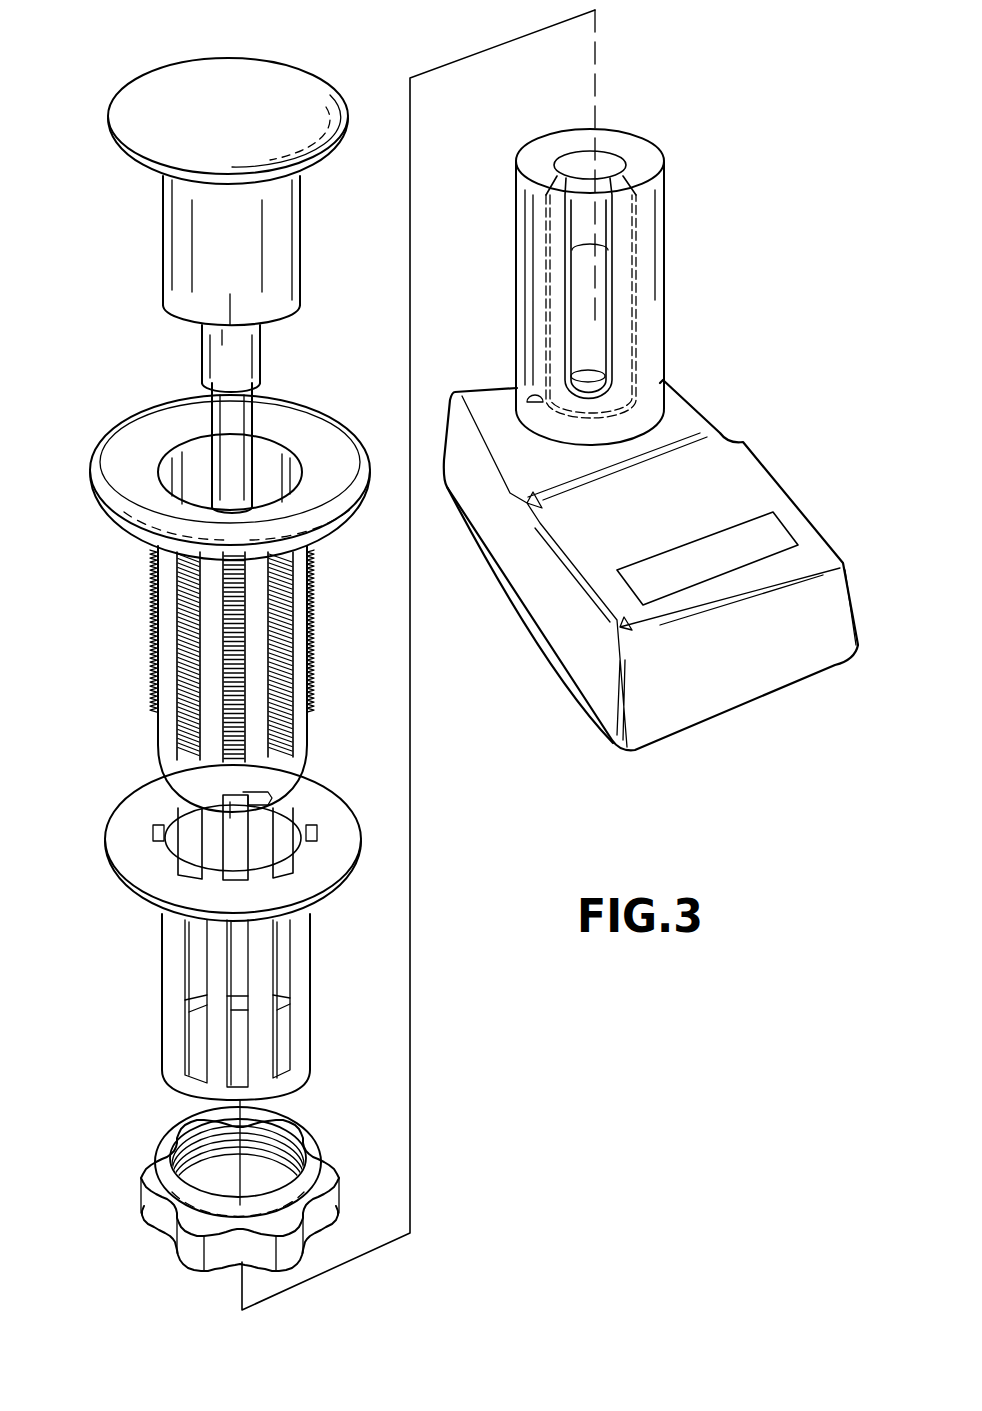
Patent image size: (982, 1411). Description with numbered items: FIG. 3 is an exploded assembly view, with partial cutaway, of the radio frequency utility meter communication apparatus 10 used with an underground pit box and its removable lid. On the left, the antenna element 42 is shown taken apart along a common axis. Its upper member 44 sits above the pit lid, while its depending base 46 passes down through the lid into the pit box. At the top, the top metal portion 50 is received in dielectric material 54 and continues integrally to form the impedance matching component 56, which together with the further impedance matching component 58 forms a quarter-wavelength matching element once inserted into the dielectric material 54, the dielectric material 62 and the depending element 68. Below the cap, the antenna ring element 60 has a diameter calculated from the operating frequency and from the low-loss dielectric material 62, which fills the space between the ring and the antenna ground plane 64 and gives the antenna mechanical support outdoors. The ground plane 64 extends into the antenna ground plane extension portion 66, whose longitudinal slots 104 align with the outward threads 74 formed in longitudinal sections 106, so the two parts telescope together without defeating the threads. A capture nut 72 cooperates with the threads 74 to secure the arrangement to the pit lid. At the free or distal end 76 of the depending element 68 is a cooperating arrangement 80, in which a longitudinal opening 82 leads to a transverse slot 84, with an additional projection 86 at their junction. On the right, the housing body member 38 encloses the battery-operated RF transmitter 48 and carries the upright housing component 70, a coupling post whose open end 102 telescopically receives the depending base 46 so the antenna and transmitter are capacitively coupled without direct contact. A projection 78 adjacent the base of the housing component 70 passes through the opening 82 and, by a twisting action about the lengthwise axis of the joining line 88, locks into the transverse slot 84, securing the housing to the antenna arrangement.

The radio frequency utility meter communication apparatus 10 is at (452, 978).
The housing body member 38 is at (651, 537).
The antenna element 42 is at (220, 269).
The upper member 44 is at (223, 104).
The depending base 46 is at (242, 679).
The RF transmitter 48 is at (527, 640).
The top metal portion 50 is at (300, 95).
The dielectric material 54 is at (190, 468).
The impedance matching component 56 is at (300, 259).
The impedance matching component 58 is at (262, 334).
The antenna ring element 60 is at (234, 468).
The dielectric material 62 is at (350, 500).
The antenna ground plane 64 is at (155, 880).
The antenna ground plane extension portion 66 is at (230, 1007).
The depending element 68 is at (158, 722).
The upright housing component 70 is at (636, 252).
The capture nut 72 is at (140, 1172).
The outward threads 74 is at (150, 582).
The free or distal end 76 is at (300, 805).
The projection 78 is at (527, 399).
The cooperating arrangement 80 is at (241, 826).
The longitudinal opening 82 is at (238, 842).
The transverse slot 84 is at (285, 780).
The additional projection 86 is at (203, 791).
The joining line 88 is at (597, 38).
The open end 102 is at (605, 158).
The longitudinal slots 104 is at (193, 998).
The longitudinal sections 106 is at (222, 638).